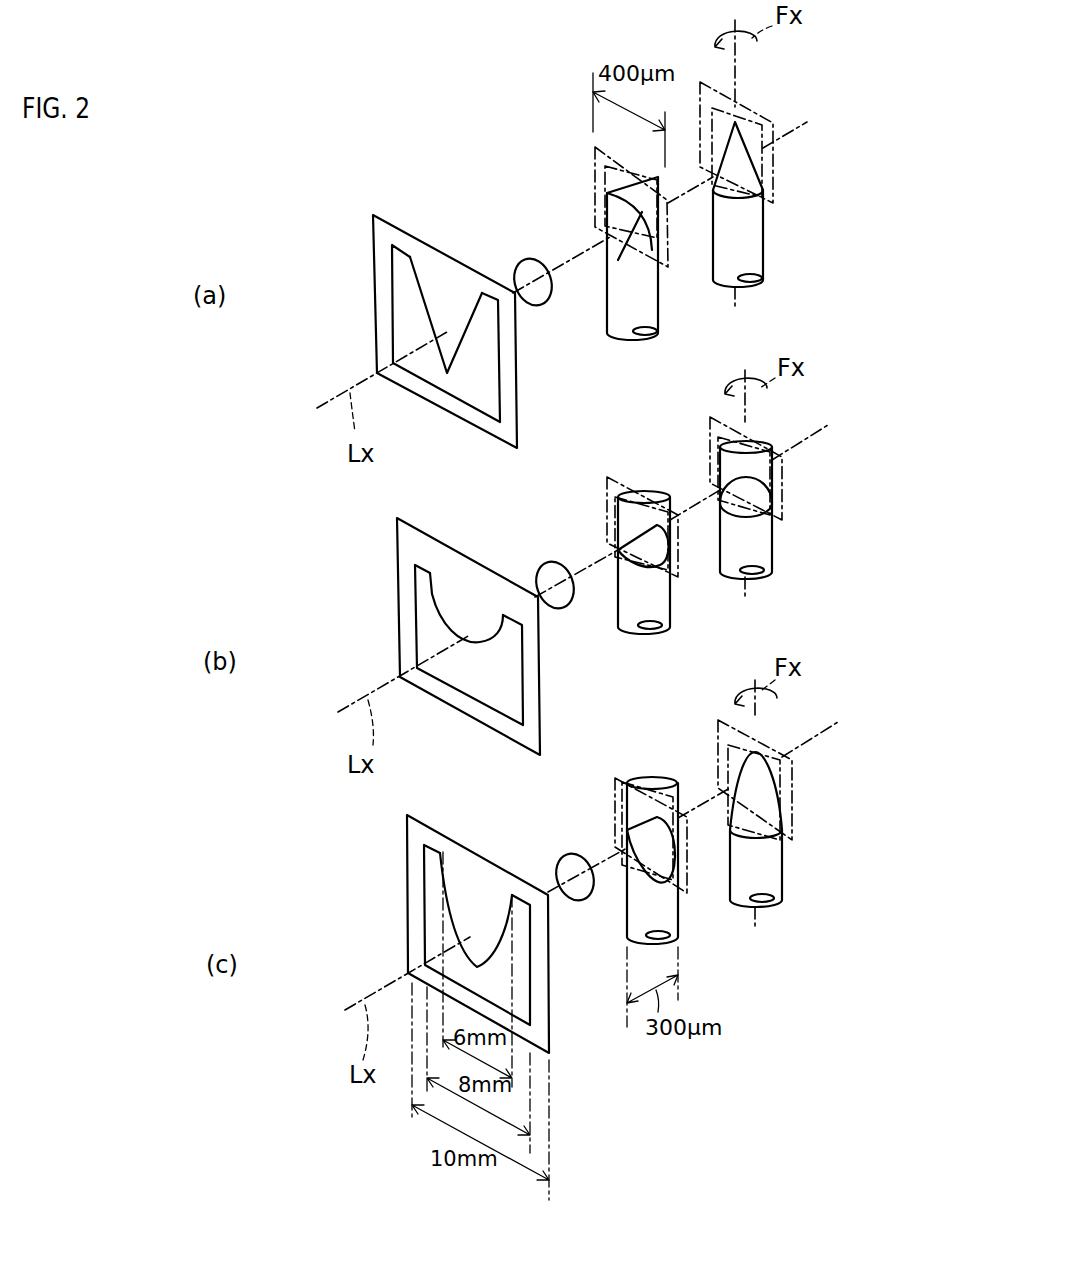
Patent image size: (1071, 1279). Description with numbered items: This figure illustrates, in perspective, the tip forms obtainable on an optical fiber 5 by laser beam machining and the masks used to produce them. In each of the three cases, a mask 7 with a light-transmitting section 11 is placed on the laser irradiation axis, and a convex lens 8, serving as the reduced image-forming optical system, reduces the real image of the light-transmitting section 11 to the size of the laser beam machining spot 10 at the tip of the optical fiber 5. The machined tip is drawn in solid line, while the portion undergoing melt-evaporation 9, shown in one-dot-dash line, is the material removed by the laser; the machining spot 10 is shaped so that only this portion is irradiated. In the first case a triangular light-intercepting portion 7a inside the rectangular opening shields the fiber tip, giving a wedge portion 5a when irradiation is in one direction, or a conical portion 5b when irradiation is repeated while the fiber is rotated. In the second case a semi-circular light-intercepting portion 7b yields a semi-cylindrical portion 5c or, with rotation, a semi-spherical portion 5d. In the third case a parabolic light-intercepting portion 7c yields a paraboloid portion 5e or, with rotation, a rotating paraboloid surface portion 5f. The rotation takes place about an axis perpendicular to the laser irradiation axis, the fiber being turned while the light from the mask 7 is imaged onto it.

The optical fiber 5 is at (640, 307).
The wedge portion 5a is at (612, 262).
The conical portion 5b is at (765, 207).
The semi-cylindrical portion 5c is at (640, 552).
The semi-spherical portion 5d is at (760, 504).
The paraboloid portion 5e is at (640, 868).
The rotating paraboloid surface portion 5f is at (765, 810).
The mask 7 is at (385, 232).
The triangular light-intercepting portion 7a is at (438, 305).
The semi-circular light-intercepting portion 7b is at (465, 612).
The parabolic light-intercepting portion 7c is at (478, 955).
The convex lens 8 is at (520, 262).
The portion undergoing melt-evaporation 9 is at (600, 193).
The laser beam machining spot 10 is at (583, 156).
The light-transmitting section 11 is at (405, 316).